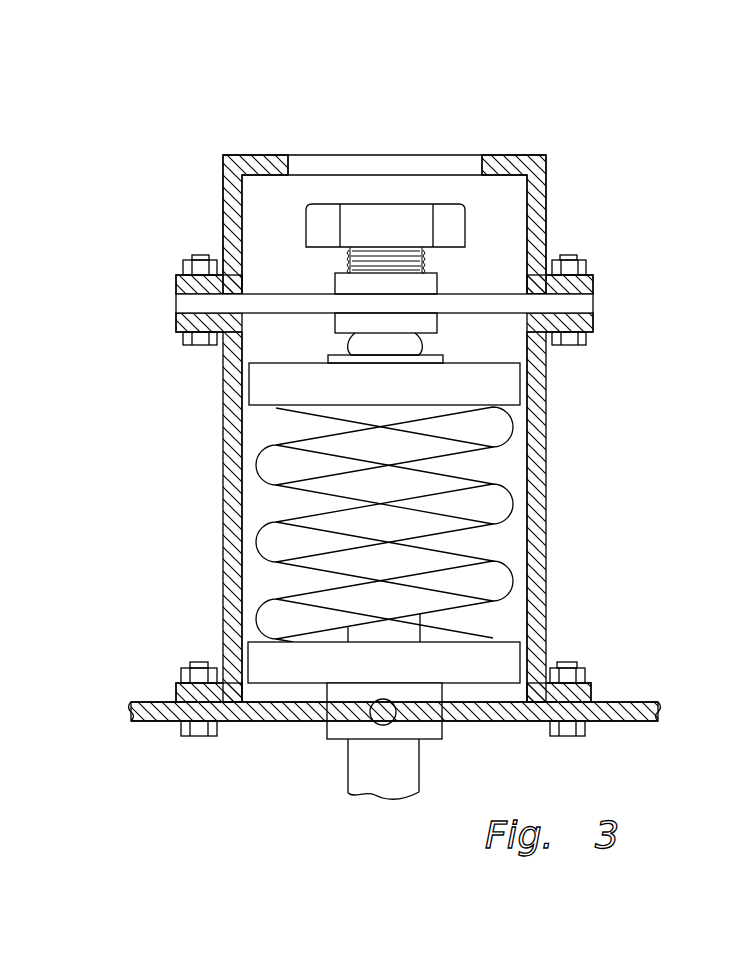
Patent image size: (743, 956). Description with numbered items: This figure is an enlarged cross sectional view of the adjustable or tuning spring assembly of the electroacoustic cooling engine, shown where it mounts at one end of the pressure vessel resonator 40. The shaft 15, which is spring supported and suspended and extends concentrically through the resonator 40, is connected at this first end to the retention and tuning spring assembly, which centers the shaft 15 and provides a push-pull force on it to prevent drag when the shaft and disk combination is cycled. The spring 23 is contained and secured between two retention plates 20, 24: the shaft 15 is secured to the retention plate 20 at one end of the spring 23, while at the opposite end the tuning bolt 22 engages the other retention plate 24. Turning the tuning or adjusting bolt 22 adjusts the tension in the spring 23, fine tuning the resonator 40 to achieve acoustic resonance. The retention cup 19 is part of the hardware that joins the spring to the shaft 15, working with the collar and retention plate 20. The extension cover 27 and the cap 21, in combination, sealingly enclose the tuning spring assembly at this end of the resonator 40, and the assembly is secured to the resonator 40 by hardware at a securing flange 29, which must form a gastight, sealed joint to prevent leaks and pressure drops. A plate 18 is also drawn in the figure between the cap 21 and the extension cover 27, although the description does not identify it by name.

The shaft 15 is at (403, 777).
The mounting plate 18 is at (493, 294).
The retention cup 19 is at (354, 675).
The retention plate 20 is at (348, 728).
The cap 21 is at (522, 153).
The tuning bolt 22 is at (380, 203).
The spring 23 is at (513, 530).
The retention plate 24 is at (356, 397).
The extension cover 27 is at (547, 440).
The securing flange 29 is at (592, 332).
The pressure vessel resonator 40 is at (615, 702).